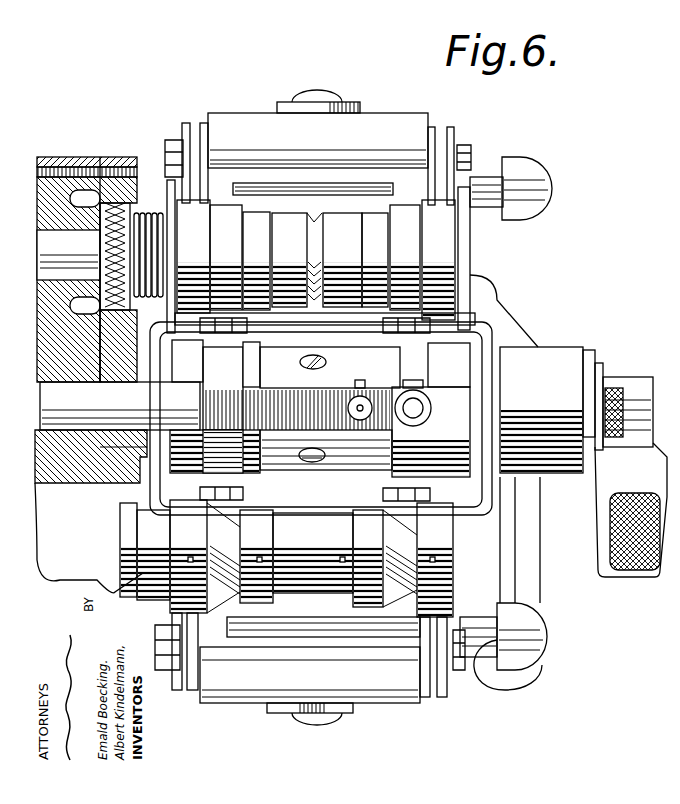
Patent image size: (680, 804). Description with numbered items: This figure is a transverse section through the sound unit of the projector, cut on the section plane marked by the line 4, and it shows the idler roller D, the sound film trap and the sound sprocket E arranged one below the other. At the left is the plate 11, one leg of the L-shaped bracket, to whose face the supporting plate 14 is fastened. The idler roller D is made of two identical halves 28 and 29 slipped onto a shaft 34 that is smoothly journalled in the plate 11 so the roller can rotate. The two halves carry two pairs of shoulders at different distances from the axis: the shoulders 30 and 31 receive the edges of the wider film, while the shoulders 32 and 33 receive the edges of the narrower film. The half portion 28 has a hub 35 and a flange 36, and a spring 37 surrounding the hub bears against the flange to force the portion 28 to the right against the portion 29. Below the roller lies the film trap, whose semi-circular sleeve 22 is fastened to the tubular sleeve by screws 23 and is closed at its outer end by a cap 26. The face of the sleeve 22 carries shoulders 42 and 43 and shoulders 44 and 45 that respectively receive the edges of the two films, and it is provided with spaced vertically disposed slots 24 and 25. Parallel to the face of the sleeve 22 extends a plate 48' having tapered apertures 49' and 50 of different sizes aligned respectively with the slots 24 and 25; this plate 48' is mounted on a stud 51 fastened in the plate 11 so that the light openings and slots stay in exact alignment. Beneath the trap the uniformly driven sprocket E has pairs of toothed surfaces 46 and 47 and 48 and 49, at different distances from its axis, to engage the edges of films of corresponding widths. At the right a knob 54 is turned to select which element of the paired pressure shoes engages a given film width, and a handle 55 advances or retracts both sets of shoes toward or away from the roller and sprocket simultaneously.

The section line 4- 4 is at (413, 103).
The plate 11 is at (65, 157).
The shaft 34 is at (69, 250).
The hub 35 is at (142, 200).
The flange 36 is at (165, 205).
The spring 37 is at (162, 305).
The shoulder 30 is at (193, 256).
The shoulder 32 is at (256, 261).
The roller half portion 28 is at (289, 260).
The roller half portion 29 is at (342, 260).
The shoulder 33 is at (375, 260).
The shoulder 31 is at (438, 260).
The idler roller D is at (447, 260).
The knob 54 is at (543, 178).
The semi-circular sleeve 22 is at (293, 352).
The screw 23 is at (318, 358).
The shoulder 42 is at (187, 361).
The plate 48' is at (296, 386).
The shoulder 44 is at (248, 360).
The slot 24 is at (340, 383).
The shoulder 45 is at (378, 364).
The slot 25 is at (410, 380).
The shoulder 43 is at (449, 365).
The tapered aperture 50 is at (420, 408).
The cap 26 is at (576, 465).
The tapered aperture 49' is at (358, 445).
The stud 51 is at (83, 400).
The supporting plate 14 is at (112, 447).
The toothed surface 46 is at (188, 556).
The toothed surface 48 is at (256, 556).
The sound sprocket E is at (313, 553).
The toothed surface 49 is at (361, 558).
The toothed surface 47 is at (435, 560).
The handle 55 is at (640, 567).